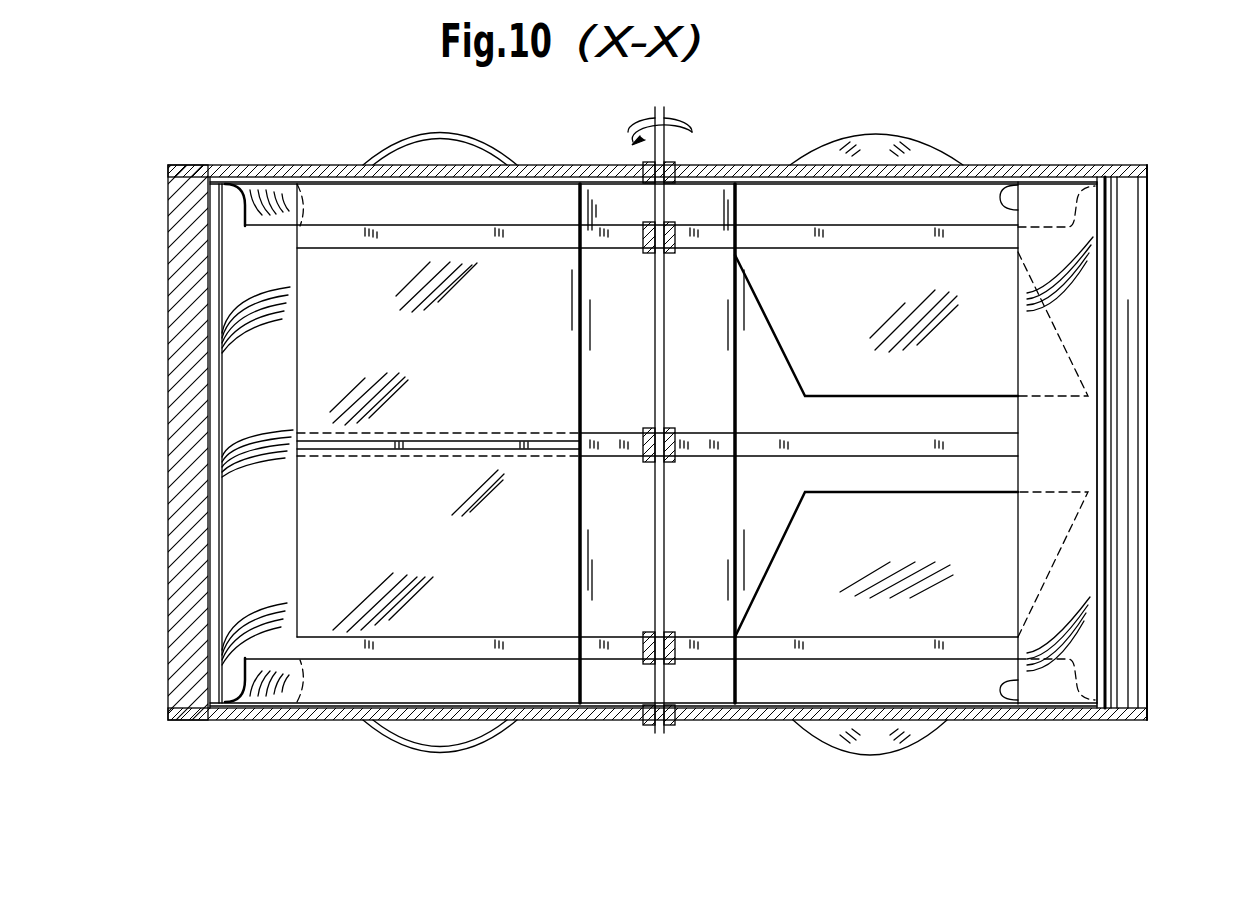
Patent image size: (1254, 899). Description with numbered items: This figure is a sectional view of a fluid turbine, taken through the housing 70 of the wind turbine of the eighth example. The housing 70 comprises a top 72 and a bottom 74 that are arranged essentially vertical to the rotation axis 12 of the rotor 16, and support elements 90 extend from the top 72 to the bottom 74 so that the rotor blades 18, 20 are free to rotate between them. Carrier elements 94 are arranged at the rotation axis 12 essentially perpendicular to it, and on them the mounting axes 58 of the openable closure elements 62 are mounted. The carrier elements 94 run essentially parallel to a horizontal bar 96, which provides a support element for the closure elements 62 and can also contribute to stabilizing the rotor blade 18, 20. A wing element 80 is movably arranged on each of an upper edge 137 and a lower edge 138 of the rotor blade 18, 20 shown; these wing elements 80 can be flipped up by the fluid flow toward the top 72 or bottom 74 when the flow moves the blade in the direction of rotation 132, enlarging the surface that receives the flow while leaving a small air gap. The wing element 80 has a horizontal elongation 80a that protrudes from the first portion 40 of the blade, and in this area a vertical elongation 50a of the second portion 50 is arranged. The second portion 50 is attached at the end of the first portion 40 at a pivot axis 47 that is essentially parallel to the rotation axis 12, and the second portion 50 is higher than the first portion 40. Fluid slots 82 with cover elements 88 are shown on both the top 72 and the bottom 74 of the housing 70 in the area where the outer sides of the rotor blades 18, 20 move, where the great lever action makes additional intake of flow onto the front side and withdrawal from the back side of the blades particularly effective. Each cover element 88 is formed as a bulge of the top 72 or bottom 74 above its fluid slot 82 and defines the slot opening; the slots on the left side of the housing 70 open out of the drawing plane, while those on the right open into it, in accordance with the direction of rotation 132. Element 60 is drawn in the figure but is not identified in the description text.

The rotation axis 12 is at (666, 108).
The rotor 16 is at (189, 455).
The rotor blade 18 is at (214, 310).
The rotor blade 20 is at (1099, 287).
The first portion 40 is at (552, 722).
The pivot axis 47 is at (276, 560).
The second portion 50 is at (211, 637).
The vertical elongation 50a is at (297, 183).
The mounting axis 58 is at (538, 245).
The guide member 60 is at (752, 350).
The openable closure element 62 is at (335, 287).
The housing 70 is at (190, 162).
The top 72 is at (256, 176).
The bottom 74 is at (622, 722).
The wing element 80 is at (965, 246).
The horizontal elongation 80a is at (240, 205).
The fluid slot 82 is at (454, 158).
The cover element 88 is at (427, 147).
The support element 90 is at (178, 375).
The carrier element 94 is at (318, 222).
The horizontal bar 96 is at (1018, 445).
The direction of rotation 132 is at (693, 133).
The upper edge 137 is at (523, 228).
The lower edge 138 is at (407, 642).